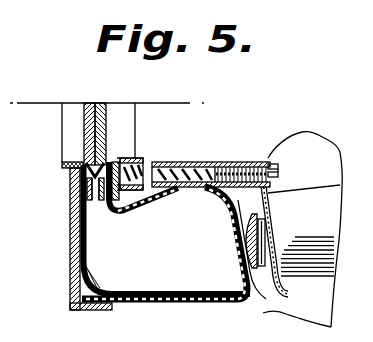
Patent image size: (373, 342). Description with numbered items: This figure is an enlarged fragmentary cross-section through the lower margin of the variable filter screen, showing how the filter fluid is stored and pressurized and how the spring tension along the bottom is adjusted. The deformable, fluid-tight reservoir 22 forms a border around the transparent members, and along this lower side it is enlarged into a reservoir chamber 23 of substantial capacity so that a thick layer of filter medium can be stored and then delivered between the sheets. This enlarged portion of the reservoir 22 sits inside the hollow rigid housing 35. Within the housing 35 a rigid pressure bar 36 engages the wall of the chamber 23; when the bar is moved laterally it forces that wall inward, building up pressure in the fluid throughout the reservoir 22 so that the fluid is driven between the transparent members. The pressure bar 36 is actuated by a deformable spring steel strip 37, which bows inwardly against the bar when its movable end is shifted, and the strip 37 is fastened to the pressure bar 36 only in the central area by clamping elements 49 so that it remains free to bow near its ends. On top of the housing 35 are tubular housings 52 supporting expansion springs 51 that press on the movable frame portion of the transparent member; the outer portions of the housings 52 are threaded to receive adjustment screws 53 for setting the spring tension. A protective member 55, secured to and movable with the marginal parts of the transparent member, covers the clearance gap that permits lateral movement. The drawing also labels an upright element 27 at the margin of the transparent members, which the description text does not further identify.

The reservoir 22 is at (97, 300).
The reservoir chamber 23 is at (152, 283).
The post 27 is at (106, 118).
The housing 35 is at (250, 303).
The pressure bar 36 is at (250, 249).
The spring steel strip 37 is at (258, 236).
The clamping elements 49 is at (250, 268).
The expansion springs 51 is at (149, 162).
The tubular housings 52 is at (201, 162).
The adjustment screws 53 is at (237, 162).
The protective member 55 is at (138, 158).